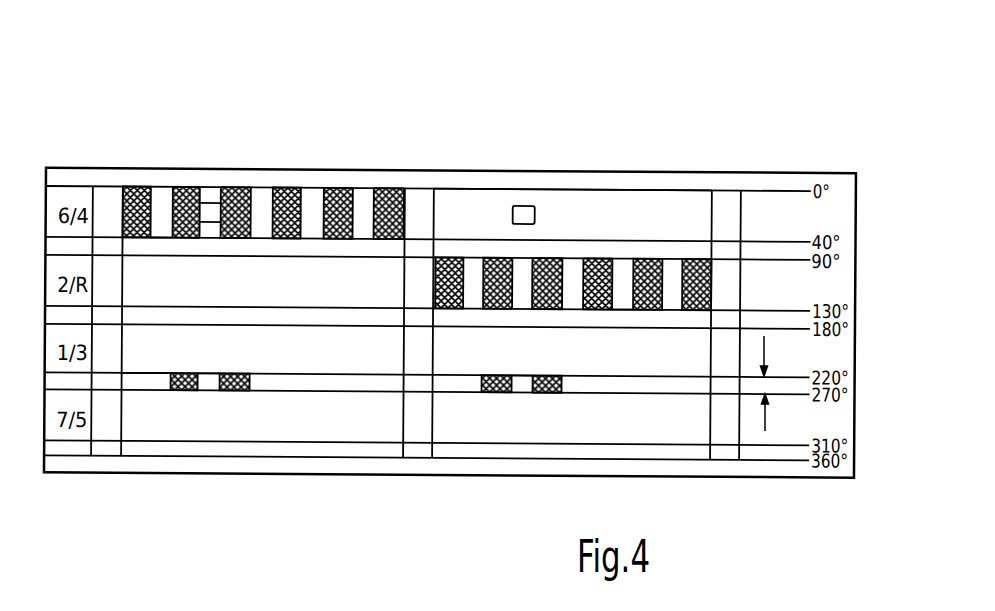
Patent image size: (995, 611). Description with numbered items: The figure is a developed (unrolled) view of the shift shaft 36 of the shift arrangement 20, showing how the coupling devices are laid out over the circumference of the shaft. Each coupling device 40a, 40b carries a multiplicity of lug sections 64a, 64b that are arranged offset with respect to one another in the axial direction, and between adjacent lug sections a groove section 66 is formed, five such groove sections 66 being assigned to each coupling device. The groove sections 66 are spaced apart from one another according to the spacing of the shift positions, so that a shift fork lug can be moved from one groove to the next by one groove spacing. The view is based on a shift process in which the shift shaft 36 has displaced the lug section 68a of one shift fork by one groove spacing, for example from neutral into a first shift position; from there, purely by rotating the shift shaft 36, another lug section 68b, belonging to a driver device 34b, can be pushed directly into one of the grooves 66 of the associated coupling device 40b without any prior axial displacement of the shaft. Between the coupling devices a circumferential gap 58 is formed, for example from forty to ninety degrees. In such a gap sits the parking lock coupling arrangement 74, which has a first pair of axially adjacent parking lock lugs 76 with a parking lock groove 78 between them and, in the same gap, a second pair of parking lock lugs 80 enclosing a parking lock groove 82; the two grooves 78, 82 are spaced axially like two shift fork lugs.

The shift arrangement 20 is at (728, 143).
The shift shaft 36 is at (770, 215).
The coupling device 40a is at (267, 134).
The coupling device 40b is at (579, 169).
The lug section 64a is at (187, 203).
The lug section 64b is at (500, 258).
The groove section 66 is at (158, 203).
The lug section 68a is at (211, 210).
The lug section 68b is at (524, 206).
The driver device 34b is at (548, 205).
The parking lock coupling arrangement 74 is at (155, 384).
The parking lock lugs 76 is at (233, 388).
The parking lock groove 78 is at (209, 388).
The parking lock lugs 80 is at (550, 392).
The parking lock groove 82 is at (522, 388).
The circumferential gap 58 is at (768, 422).